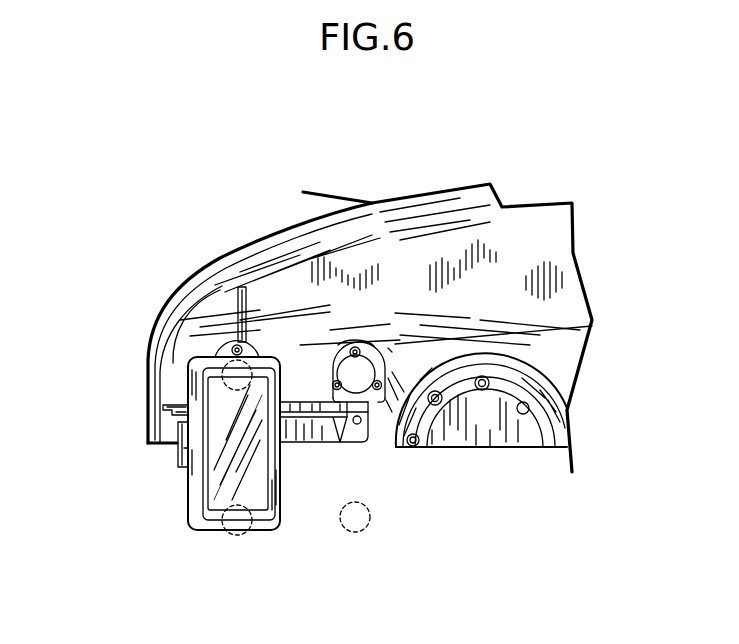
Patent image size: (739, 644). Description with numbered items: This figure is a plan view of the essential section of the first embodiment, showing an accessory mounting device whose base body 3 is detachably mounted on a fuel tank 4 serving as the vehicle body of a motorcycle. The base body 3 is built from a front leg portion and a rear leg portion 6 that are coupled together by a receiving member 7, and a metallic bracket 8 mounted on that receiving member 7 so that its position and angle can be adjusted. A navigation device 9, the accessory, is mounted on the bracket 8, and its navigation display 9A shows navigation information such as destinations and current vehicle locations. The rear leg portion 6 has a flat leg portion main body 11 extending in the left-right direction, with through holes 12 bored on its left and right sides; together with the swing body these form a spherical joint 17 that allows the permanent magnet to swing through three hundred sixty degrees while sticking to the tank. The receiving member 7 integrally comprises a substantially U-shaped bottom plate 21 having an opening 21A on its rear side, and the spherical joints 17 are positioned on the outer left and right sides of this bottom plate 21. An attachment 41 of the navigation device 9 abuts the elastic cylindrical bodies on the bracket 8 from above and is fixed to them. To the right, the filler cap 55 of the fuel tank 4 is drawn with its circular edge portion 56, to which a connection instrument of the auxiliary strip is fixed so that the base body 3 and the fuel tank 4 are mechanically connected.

The base body 3 is at (303, 400).
The fuel tank 4 is at (532, 238).
The rear leg portion 6 is at (382, 351).
The receiving member 7 is at (177, 405).
The bracket 8 is at (177, 417).
The navigation device 9 is at (188, 478).
The navigation display 9A is at (217, 482).
The leg portion main body 11 is at (592, 326).
The through hole 12 is at (367, 350).
The spherical joint 17 is at (230, 365).
The bottom plate 21 is at (358, 437).
The opening 21A is at (303, 423).
The attachment 41 is at (183, 448).
The filler cap 55 is at (477, 430).
The edge portion 56 is at (538, 447).